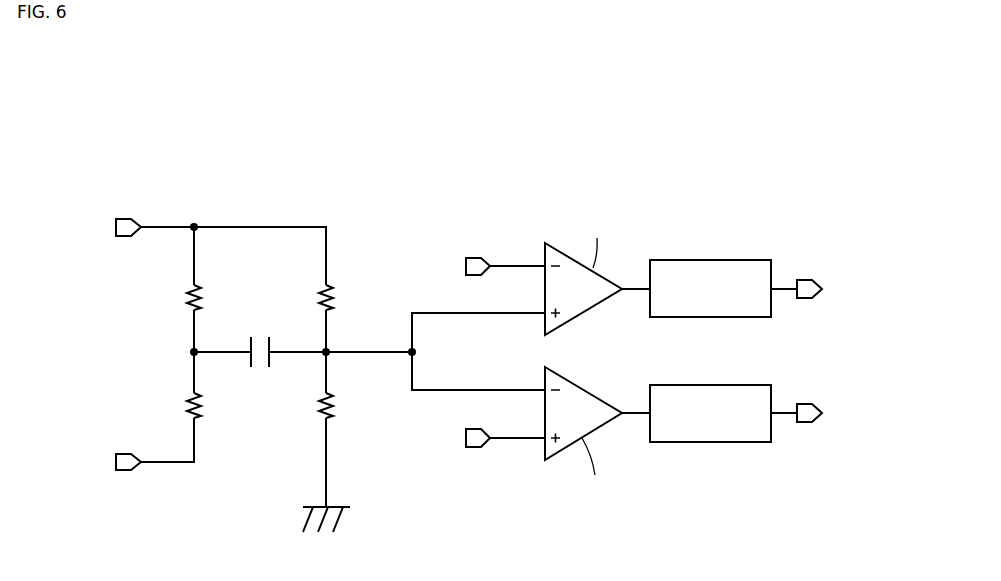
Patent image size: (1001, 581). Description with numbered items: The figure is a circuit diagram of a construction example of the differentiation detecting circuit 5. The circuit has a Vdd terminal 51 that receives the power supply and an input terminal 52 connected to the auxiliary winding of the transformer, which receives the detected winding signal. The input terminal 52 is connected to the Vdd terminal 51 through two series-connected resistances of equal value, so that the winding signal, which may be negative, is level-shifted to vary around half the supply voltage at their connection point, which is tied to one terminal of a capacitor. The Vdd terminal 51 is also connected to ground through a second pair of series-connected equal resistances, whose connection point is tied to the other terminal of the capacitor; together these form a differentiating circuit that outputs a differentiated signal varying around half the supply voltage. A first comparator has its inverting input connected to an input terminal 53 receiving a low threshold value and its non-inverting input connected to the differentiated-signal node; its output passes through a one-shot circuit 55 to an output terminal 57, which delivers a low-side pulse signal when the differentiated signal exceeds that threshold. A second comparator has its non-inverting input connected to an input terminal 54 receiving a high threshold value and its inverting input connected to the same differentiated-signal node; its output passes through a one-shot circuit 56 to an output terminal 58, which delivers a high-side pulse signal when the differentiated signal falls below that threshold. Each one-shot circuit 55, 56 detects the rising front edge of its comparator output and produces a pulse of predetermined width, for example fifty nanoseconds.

The differentiation detecting circuit 5 is at (690, 189).
The Vdd terminal 51 is at (126, 215).
The input terminal 52 is at (125, 453).
The input terminal 53 is at (477, 256).
The input terminal 54 is at (477, 449).
The one-shot circuit 55 is at (730, 258).
The one-shot circuit 56 is at (705, 383).
The output terminal 57 is at (804, 277).
The output terminal 58 is at (804, 401).